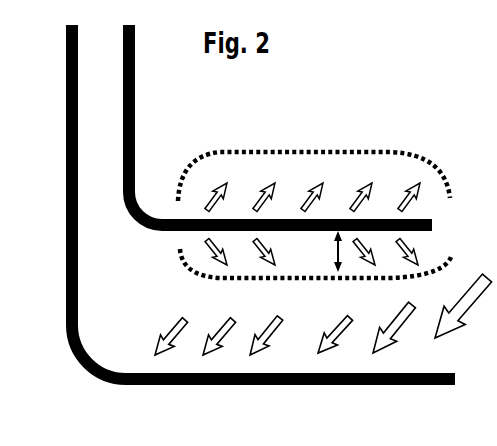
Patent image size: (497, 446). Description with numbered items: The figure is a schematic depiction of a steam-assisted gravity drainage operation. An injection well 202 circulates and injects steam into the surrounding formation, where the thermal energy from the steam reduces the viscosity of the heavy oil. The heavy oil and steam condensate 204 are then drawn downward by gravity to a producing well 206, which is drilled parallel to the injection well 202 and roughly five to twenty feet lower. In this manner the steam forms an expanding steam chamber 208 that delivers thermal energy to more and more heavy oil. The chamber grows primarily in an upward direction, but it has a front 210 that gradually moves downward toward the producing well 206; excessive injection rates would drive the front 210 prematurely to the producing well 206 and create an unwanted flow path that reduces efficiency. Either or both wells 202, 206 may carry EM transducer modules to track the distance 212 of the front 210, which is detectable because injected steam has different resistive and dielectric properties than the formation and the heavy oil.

The injection well 202 is at (123, 73).
The heavy oil and steam condensate 204 is at (322, 315).
The producing well 206 is at (66, 73).
The steam chamber 208 is at (197, 167).
The front 210 is at (186, 265).
The distance 212 is at (321, 251).